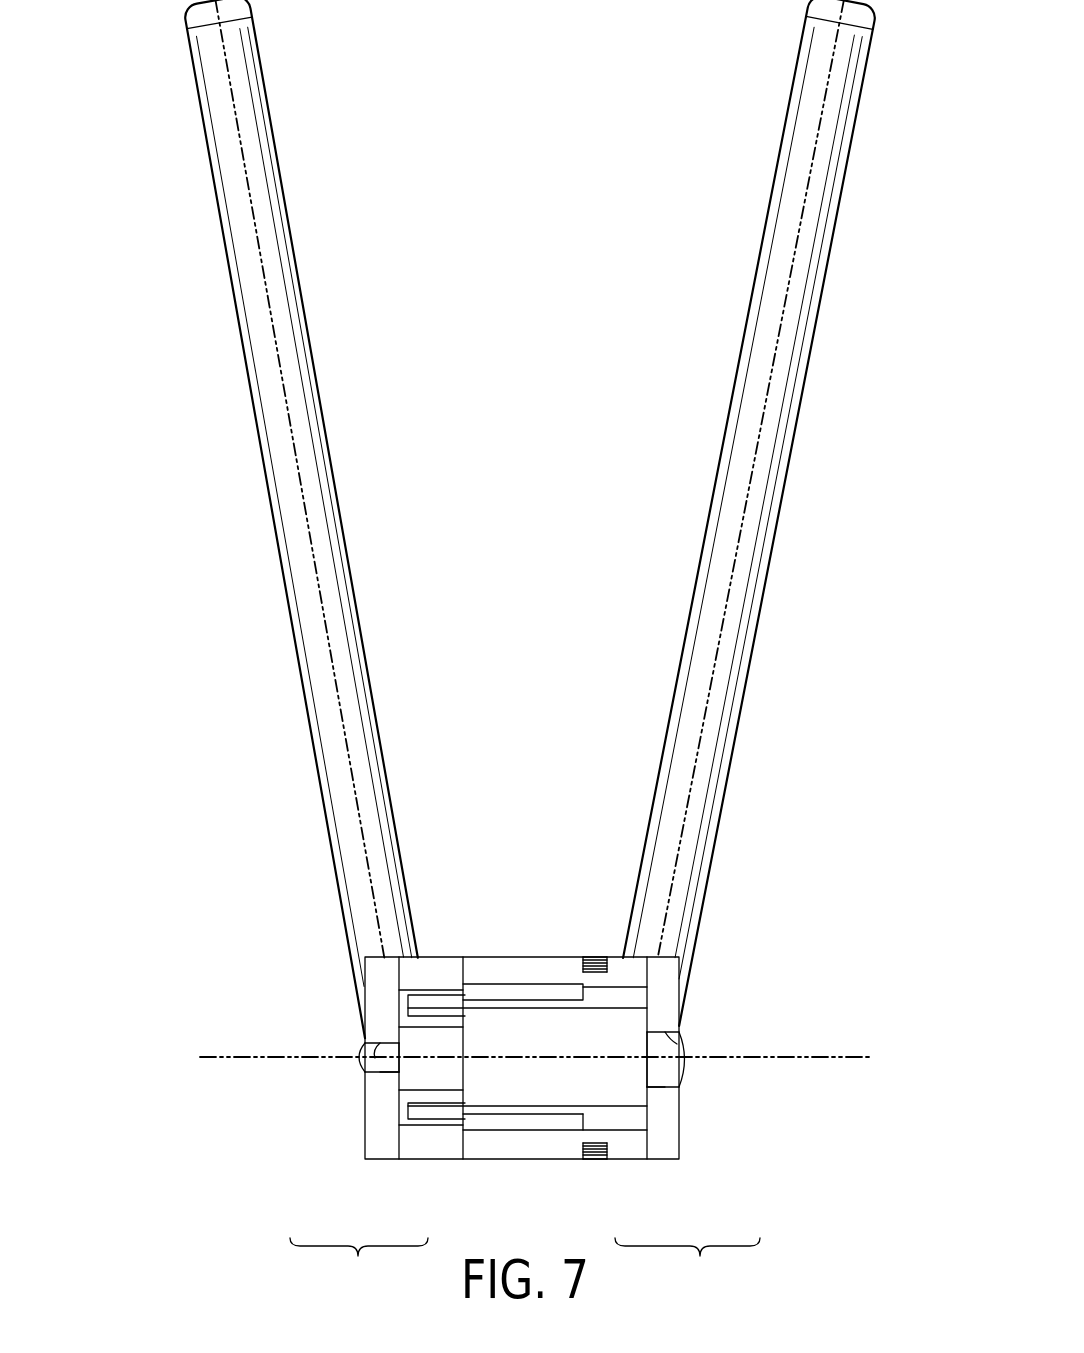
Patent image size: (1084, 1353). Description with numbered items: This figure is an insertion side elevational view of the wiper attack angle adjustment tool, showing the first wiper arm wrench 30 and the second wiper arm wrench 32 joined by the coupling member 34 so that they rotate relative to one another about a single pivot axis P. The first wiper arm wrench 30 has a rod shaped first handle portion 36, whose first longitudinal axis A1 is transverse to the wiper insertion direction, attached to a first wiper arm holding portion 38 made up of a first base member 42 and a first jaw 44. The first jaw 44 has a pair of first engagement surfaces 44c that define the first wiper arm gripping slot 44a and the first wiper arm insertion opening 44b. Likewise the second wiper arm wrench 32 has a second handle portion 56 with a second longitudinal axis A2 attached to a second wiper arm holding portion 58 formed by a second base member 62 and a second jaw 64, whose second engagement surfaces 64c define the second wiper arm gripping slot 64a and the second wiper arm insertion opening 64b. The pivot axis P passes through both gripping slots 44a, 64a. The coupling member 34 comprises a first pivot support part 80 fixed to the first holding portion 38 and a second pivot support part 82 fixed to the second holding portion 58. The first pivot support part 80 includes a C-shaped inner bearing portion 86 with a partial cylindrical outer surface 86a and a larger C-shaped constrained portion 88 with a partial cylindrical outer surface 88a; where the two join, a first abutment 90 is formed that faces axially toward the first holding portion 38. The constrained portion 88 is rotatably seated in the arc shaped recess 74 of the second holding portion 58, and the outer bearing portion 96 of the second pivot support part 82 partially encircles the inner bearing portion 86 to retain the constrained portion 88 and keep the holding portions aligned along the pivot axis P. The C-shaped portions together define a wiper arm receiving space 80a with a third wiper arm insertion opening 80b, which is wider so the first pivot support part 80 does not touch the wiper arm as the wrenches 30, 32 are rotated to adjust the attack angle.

The first wiper arm wrench 30 is at (744, 970).
The second wiper arm wrench 32 is at (298, 973).
The coupling member 34 is at (503, 838).
The first handle portion 36 is at (740, 382).
The first wiper arm holding portion 38 is at (687, 1261).
The first base member 42 is at (623, 1165).
The first jaw 44 is at (674, 1165).
The first wiper arm gripping slot 44a is at (685, 1066).
The first wiper arm insertion opening 44b is at (664, 1090).
The first engagement surfaces 44c is at (685, 1037).
The second handle portion 56 is at (318, 373).
The second wiper arm holding portion 58 is at (359, 1261).
The second base member 62 is at (427, 1165).
The second jaw 64 is at (369, 1165).
The second wiper arm gripping slot 64a is at (355, 1060).
The second wiper arm insertion opening 64b is at (380, 1078).
The second engagement surfaces 64c is at (358, 1049).
The arc shaped recess 74 is at (437, 1119).
The first pivot support part 80 is at (565, 1000).
The wiper arm receiving space 80a is at (507, 1107).
The third wiper arm insertion opening 80b is at (546, 1086).
The second pivot support part 82 is at (543, 972).
The inner bearing portion 86 is at (530, 1007).
The partial cylindrical outer surface 86a is at (572, 957).
The constrained portion 88 is at (441, 998).
The partial cylindrical outer surface 88a is at (450, 988).
The first abutment 90 is at (470, 1118).
The outer bearing portion 96 is at (488, 963).
The first longitudinal axis A1 is at (785, 306).
The second longitudinal axis A2 is at (270, 309).
The pivot axis P is at (836, 1052).